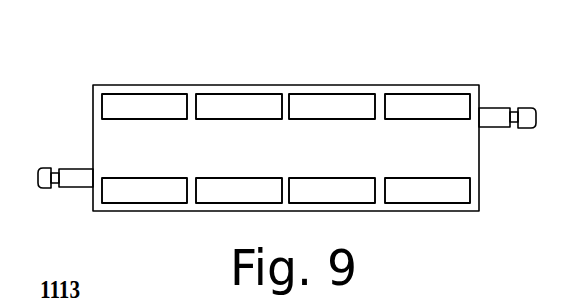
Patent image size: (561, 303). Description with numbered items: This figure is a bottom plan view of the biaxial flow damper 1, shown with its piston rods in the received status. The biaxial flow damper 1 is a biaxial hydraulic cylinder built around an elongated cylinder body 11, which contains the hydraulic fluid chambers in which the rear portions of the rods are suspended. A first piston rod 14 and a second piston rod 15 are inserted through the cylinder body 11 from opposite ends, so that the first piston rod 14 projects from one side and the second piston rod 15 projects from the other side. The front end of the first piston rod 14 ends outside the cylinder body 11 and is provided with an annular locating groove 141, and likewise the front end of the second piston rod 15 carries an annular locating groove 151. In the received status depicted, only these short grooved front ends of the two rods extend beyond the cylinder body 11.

The biaxial flow damper 1 is at (349, 72).
The cylinder body 11 is at (257, 84).
The first piston rod 14 is at (514, 107).
The annular locating groove 141 is at (501, 108).
The second piston rod 15 is at (77, 168).
The annular locating groove 151 is at (55, 168).